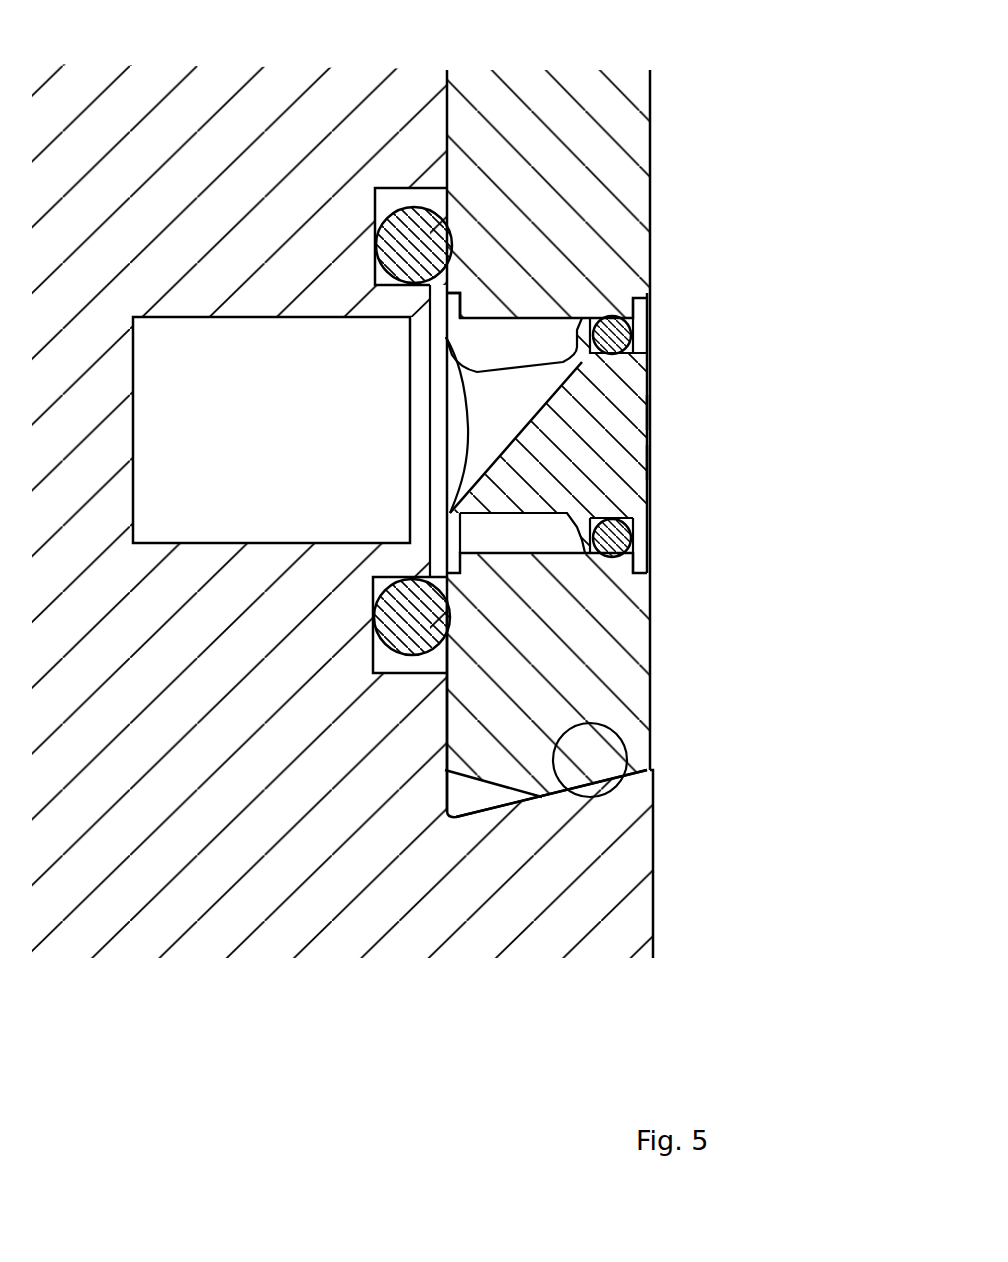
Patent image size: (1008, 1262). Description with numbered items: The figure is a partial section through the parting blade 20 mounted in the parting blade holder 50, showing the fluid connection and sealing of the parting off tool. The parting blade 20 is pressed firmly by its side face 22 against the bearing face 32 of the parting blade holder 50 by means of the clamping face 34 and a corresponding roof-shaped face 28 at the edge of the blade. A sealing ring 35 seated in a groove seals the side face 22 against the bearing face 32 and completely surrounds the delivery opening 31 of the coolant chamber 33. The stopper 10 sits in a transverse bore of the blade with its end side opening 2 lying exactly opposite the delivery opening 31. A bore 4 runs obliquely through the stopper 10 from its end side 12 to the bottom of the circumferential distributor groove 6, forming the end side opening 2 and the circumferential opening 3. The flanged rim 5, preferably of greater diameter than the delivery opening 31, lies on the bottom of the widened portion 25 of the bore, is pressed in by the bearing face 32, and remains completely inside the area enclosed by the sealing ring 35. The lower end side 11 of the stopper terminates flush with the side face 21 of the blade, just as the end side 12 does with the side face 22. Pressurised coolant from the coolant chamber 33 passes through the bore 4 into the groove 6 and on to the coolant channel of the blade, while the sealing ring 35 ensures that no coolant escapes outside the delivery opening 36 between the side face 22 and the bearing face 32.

The end side opening 2 is at (450, 423).
The circumferential opening 3 is at (532, 320).
The bore 4 is at (513, 418).
The flanged rim 5 is at (447, 305).
The distributor groove 6 is at (522, 560).
The stopper 10 is at (662, 411).
The lower end side 11 is at (662, 462).
The end side 12 is at (445, 537).
The parting blade 20 is at (676, 102).
The side face 21 is at (662, 598).
The side face 22 is at (434, 707).
The widened portion 25 is at (652, 314).
The roof-shaped face 28 is at (595, 776).
The delivery opening 31 is at (636, 540).
The bearing face 32 is at (452, 123).
The coolant chamber 33 is at (257, 435).
The clamping face 34 is at (594, 783).
The sealing ring 35 is at (430, 236).
The delivery opening 36 is at (440, 195).
The parting blade holder 50 is at (562, 929).